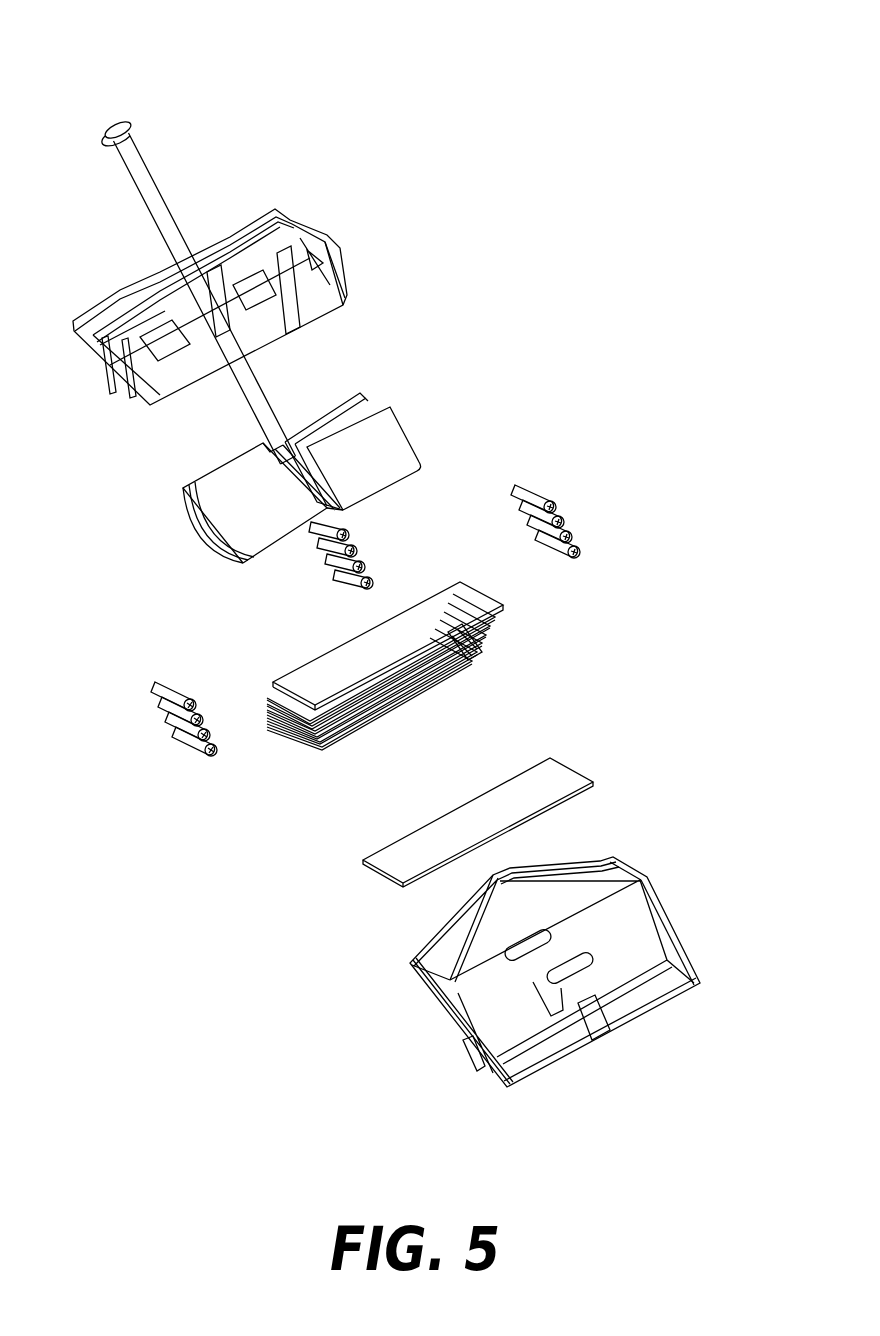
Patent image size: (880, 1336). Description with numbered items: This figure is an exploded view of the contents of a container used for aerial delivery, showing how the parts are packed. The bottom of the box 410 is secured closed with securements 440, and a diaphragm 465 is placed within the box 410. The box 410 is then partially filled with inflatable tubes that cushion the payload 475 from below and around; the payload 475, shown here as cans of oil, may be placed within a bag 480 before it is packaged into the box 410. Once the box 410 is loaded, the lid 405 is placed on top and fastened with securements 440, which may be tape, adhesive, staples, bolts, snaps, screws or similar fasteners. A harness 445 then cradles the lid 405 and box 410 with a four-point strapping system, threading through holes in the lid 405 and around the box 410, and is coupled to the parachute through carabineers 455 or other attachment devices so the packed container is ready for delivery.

The lid 405 is at (240, 266).
The box 410 is at (420, 983).
The securements 440 is at (160, 270).
The harness 445 is at (178, 328).
The carabineers 455 is at (114, 125).
The diaphragm 465 is at (372, 863).
The payload 475 is at (393, 420).
The bag 480 is at (479, 591).